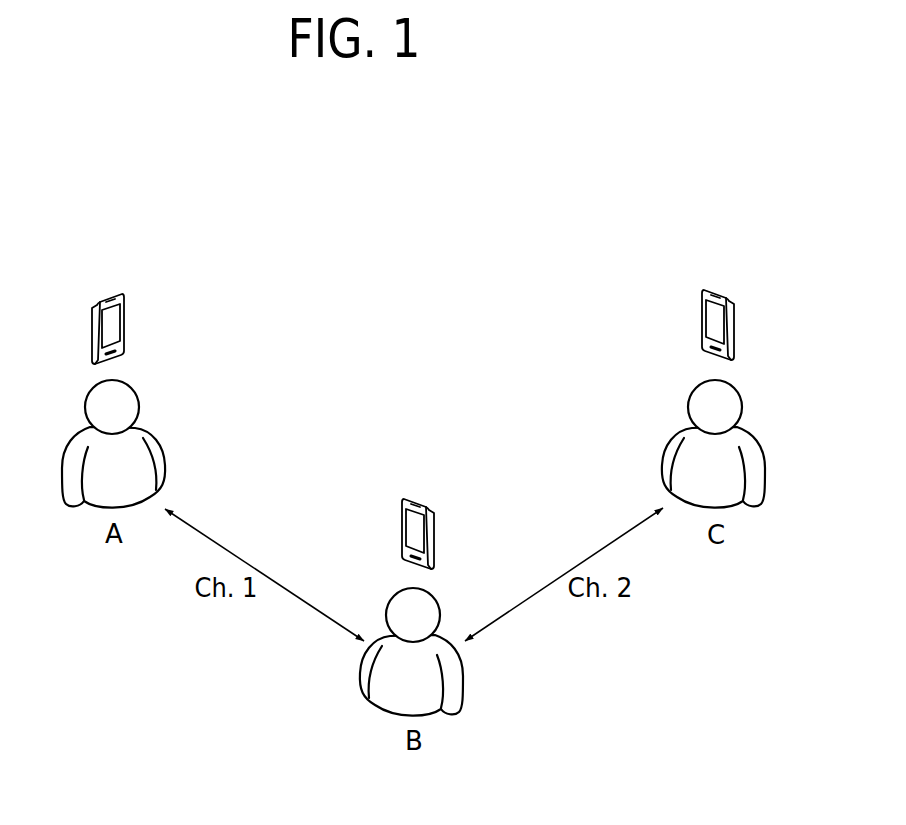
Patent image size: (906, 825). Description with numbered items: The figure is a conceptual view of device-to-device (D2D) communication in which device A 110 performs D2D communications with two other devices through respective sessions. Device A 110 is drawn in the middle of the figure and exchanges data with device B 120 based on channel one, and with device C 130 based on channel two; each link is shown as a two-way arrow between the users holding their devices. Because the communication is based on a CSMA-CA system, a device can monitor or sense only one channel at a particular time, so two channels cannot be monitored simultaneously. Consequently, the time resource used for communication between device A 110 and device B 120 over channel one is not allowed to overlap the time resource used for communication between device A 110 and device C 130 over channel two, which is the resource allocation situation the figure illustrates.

The device A 110 is at (417, 498).
The device B 120 is at (104, 292).
The device C 130 is at (719, 290).